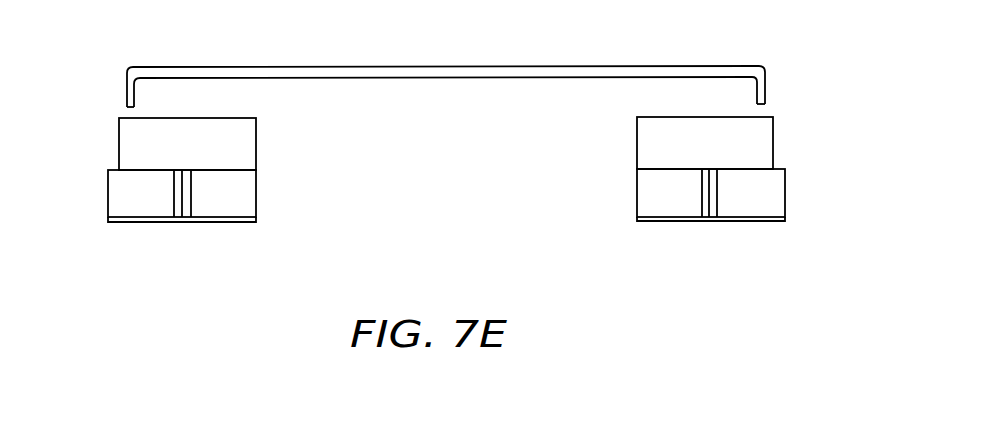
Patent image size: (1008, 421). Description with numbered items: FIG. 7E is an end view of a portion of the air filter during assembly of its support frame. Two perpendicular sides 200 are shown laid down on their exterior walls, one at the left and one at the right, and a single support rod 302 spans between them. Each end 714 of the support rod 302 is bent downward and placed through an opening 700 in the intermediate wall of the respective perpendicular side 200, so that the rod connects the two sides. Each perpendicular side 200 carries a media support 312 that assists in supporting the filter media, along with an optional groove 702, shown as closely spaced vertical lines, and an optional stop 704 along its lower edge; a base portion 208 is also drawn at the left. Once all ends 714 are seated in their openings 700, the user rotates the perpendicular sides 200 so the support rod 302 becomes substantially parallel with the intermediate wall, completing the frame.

The perpendicular side 200 is at (467, 183).
The base 208 is at (238, 169).
The support rod 302 is at (448, 65).
The media support 312 is at (240, 140).
The opening 700 is at (137, 170).
The groove 702 is at (180, 205).
The stop 704 is at (232, 217).
The end 714 is at (127, 105).